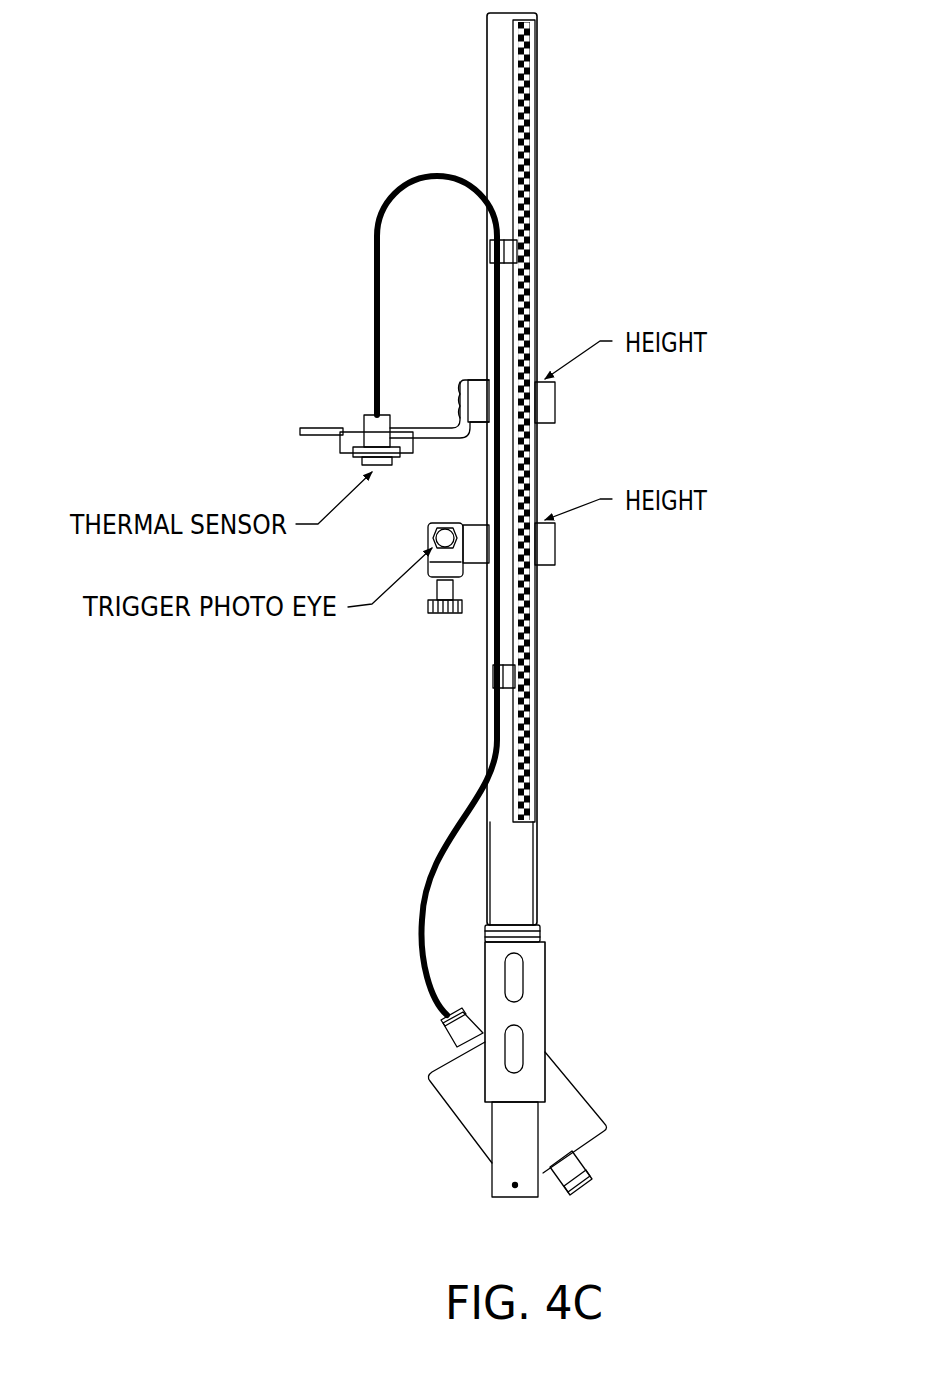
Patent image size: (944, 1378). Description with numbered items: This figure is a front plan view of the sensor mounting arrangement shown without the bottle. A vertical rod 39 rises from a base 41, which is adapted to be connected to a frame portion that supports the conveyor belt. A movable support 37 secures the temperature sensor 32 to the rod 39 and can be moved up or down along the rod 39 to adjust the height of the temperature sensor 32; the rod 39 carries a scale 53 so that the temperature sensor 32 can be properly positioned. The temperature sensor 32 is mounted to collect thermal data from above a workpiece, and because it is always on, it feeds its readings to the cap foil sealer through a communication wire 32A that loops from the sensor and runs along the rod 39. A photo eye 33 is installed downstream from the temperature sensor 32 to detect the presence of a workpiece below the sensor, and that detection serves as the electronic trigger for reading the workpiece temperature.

The rod 39 is at (505, 103).
The communication wire 32A is at (375, 232).
The temperature sensor 32 is at (378, 426).
The photo eye 33 is at (442, 518).
The movable support 37 is at (545, 398).
The scale 53 is at (540, 672).
The base 41 is at (531, 1008).